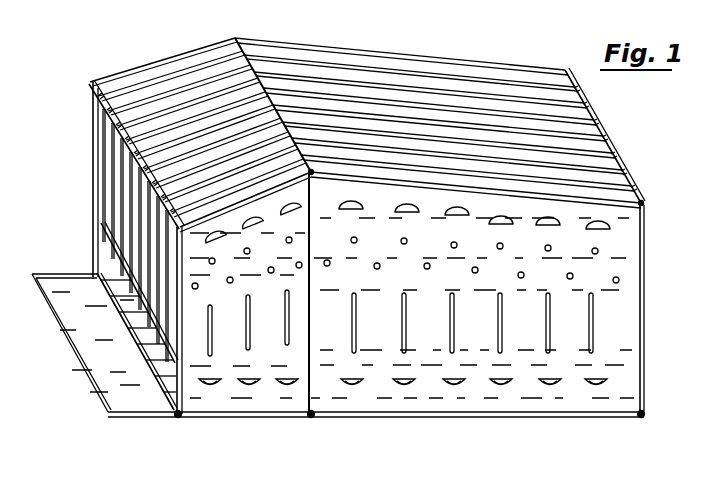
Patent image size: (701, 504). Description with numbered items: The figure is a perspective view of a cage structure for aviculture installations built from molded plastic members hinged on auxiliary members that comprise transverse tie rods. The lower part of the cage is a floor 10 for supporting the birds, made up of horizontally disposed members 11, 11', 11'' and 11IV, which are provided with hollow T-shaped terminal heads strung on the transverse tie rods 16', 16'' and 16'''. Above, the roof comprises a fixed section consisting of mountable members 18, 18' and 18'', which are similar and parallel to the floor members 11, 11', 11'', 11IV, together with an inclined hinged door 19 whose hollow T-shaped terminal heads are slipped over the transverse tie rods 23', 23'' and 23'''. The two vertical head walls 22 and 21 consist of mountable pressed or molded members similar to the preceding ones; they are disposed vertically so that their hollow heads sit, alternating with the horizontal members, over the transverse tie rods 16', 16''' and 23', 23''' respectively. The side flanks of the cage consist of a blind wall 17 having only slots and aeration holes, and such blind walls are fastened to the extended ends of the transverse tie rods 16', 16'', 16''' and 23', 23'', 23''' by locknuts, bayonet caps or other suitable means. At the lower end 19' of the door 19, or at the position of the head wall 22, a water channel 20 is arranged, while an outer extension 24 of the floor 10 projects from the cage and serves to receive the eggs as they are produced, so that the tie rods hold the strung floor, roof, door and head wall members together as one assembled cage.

The floor 10 is at (162, 393).
The horizontally disposed member 11 is at (100, 226).
The horizontally disposed member 11' is at (94, 341).
The horizontally disposed member 11'' is at (186, 344).
The horizontally disposed member 11IV is at (93, 143).
The transverse tie rod 16' is at (210, 436).
The transverse tie rod 16'' is at (348, 439).
The transverse tie rod 16''' is at (644, 446).
The blind wall 17 is at (437, 386).
The mountable member 18 is at (434, 99).
The mountable member 18' is at (410, 53).
The mountable member 18'' is at (476, 212).
The door 19 is at (200, 120).
The lower end of door 19' is at (172, 57).
The water channel 20 is at (92, 90).
The vertical head wall 21 is at (105, 236).
The vertical head wall 22 is at (625, 130).
The transverse tie rod 23' is at (106, 290).
The transverse tie rod 23'' is at (345, 292).
The transverse tie rod 23''' is at (670, 280).
The outer extension of the floor 24 is at (70, 347).